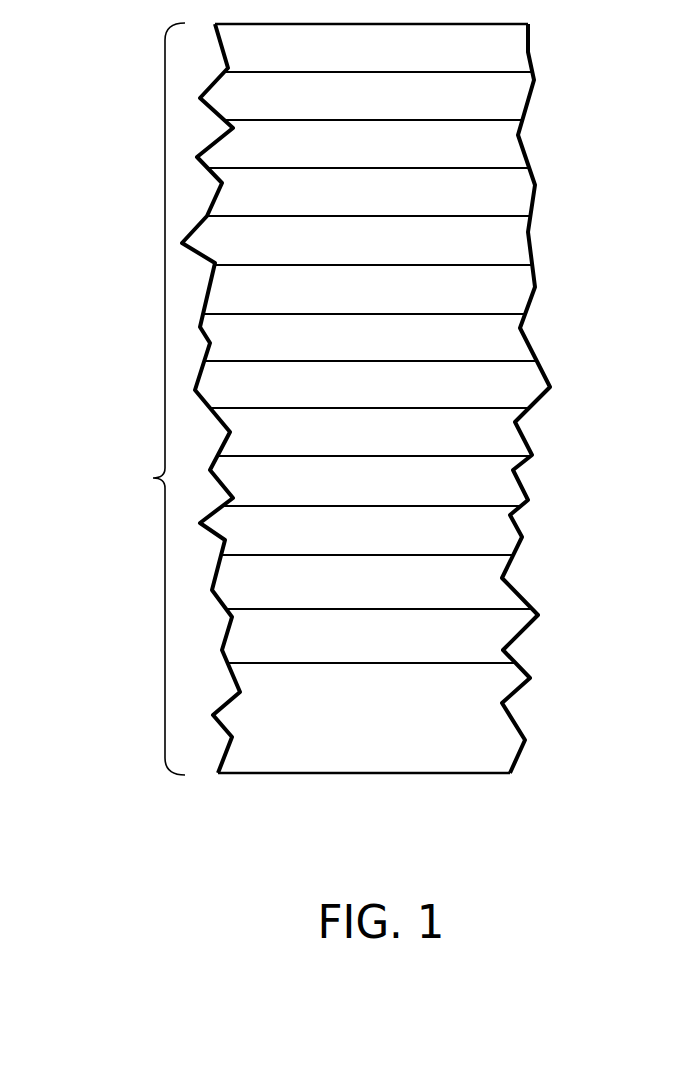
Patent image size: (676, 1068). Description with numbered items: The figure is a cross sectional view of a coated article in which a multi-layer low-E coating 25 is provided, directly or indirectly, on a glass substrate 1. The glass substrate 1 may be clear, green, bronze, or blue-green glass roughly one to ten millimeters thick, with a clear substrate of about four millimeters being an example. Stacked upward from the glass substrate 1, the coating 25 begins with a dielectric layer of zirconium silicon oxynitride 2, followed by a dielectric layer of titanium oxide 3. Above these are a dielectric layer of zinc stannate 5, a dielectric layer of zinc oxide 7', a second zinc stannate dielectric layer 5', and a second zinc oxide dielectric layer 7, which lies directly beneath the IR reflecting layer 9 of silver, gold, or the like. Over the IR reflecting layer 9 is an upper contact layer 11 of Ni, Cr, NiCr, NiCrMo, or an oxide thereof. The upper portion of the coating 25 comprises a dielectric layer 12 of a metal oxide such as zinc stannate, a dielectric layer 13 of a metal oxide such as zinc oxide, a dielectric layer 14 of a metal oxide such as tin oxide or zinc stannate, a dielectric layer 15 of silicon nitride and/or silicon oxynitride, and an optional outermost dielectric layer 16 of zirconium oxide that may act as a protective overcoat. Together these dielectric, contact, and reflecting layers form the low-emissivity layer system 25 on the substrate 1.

The glass substrate 1 is at (487, 695).
The zirconium silicon oxynitride dielectric layer 2 is at (495, 635).
The titanium oxide dielectric layer 3 is at (485, 582).
The zinc stannate dielectric layer 5 is at (404, 535).
The zinc stannate dielectric layer 5' is at (406, 436).
The zinc oxide dielectric layer 7 is at (400, 387).
The zinc oxide dielectric layer 7' is at (406, 486).
The IR reflecting layer 9 is at (500, 338).
The upper contact layer 11 is at (500, 290).
The zinc stannate dielectric layer 12 is at (500, 243).
The zinc oxide dielectric layer 13 is at (500, 191).
The tin oxide dielectric layer 14 is at (500, 144).
The silicon nitride dielectric layer 15 is at (500, 96).
The zirconium oxide dielectric layer 16 is at (500, 47).
The multi-layer low-E coating 25 is at (142, 478).